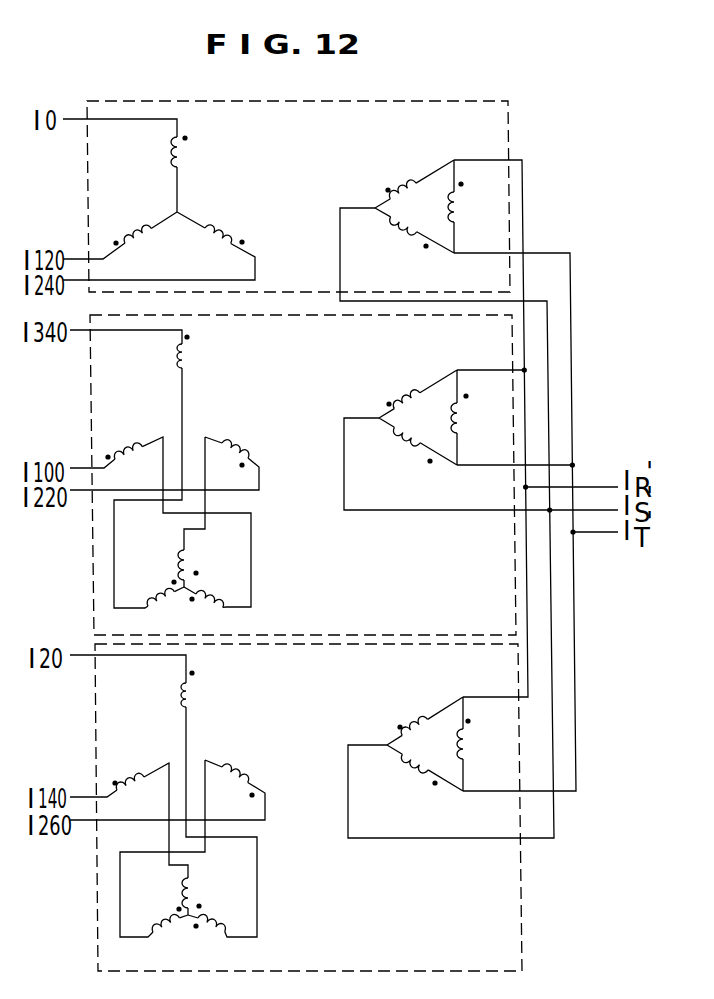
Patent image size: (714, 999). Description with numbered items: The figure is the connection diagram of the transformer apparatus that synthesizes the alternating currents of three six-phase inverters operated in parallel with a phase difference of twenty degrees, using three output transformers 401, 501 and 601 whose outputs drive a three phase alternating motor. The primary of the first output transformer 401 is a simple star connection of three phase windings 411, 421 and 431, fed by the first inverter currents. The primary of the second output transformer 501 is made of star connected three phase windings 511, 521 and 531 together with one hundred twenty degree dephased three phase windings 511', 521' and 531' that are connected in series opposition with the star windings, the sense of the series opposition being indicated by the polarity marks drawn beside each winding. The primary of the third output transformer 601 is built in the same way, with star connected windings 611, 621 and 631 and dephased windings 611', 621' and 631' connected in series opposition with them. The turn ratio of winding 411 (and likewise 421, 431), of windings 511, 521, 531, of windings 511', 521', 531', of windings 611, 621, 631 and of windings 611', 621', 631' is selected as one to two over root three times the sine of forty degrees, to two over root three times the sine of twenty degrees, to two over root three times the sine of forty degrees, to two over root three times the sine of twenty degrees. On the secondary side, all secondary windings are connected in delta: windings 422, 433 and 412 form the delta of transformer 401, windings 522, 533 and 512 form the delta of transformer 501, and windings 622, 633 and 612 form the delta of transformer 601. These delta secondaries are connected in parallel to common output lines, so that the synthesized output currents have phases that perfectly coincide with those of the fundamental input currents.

The output transformer 401 is at (365, 101).
The primary winding 411 is at (190, 156).
The primary winding 421 is at (133, 227).
The primary winding 431 is at (230, 227).
The secondary winding 422 is at (406, 179).
The secondary winding 433 is at (409, 232).
The secondary winding 412 is at (457, 208).
The output transformer 501 is at (334, 370).
The primary winding 511 is at (207, 352).
The primary winding 521 is at (122, 434).
The primary winding 531 is at (241, 438).
The dephased primary winding 511' is at (209, 559).
The dephased primary winding 521' is at (147, 581).
The dephased primary winding 531' is at (199, 614).
The secondary winding 522 is at (408, 389).
The secondary winding 533 is at (410, 441).
The secondary winding 512 is at (460, 417).
The output transformer 601 is at (334, 708).
The primary winding 611 is at (212, 690).
The primary winding 621 is at (132, 764).
The primary winding 631 is at (249, 768).
The dephased primary winding 611' is at (214, 891).
The dephased primary winding 621' is at (166, 941).
The dephased primary winding 631' is at (221, 944).
The secondary winding 622 is at (414, 722).
The secondary winding 633 is at (419, 769).
The secondary winding 612 is at (466, 743).